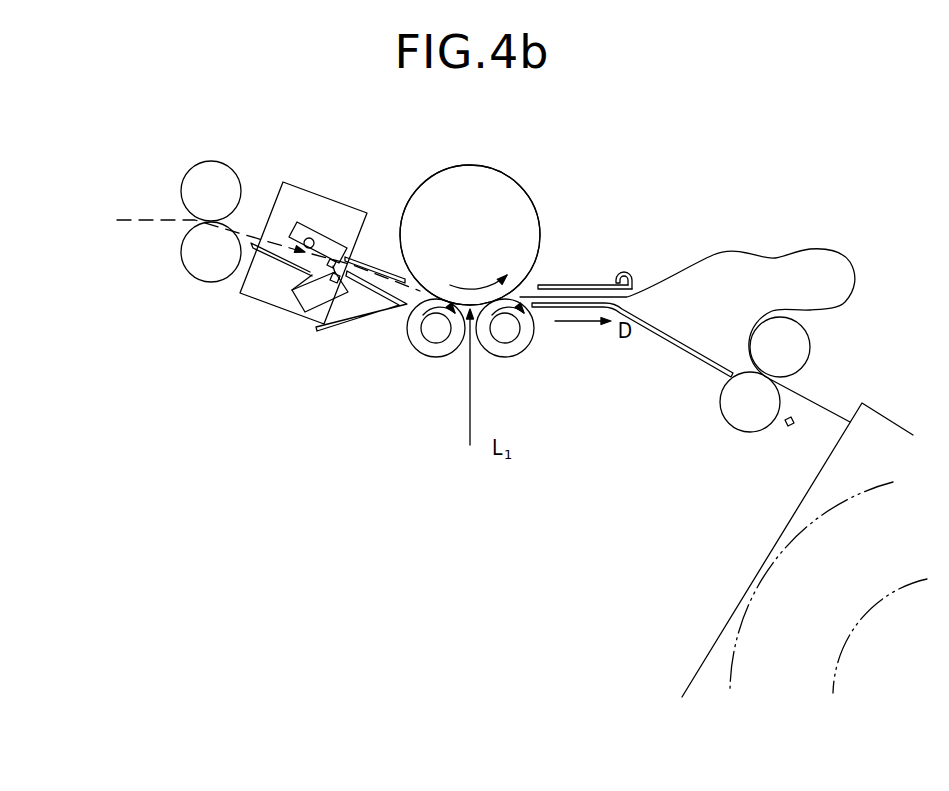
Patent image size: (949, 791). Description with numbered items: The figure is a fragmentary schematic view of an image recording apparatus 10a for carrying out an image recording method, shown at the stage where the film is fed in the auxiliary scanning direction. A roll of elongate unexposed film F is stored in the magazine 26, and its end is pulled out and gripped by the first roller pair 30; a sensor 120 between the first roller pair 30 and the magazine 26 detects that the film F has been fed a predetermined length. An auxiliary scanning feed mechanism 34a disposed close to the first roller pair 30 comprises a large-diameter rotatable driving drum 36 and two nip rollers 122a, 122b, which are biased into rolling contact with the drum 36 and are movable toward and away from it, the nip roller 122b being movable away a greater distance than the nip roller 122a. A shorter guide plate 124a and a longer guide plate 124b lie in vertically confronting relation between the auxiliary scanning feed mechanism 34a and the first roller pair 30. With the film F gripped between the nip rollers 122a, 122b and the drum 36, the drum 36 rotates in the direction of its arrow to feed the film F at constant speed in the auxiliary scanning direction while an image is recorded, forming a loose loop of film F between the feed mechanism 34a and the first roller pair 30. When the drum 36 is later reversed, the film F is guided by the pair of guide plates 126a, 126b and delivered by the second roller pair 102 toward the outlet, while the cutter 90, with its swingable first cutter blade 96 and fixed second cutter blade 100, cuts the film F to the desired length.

The second roller pair 102 is at (210, 178).
The cutter 90 is at (338, 176).
The first cutter blade 96 is at (311, 222).
The second cutter blade 100 is at (305, 308).
The guide plate 126a is at (383, 262).
The guide plate 126b is at (400, 302).
The driving drum 36 is at (465, 182).
The auxiliary scanning feed mechanism 34a is at (511, 168).
The nip roller 122b is at (437, 354).
The nip roller 122a is at (520, 355).
The shorter guide plate 124a is at (585, 285).
The longer guide plate 124b is at (688, 343).
The film F is at (748, 251).
The image recording apparatus 10a is at (690, 240).
The first roller pair 30 is at (797, 357).
The sensor 120 is at (785, 427).
The magazine 26 is at (892, 410).